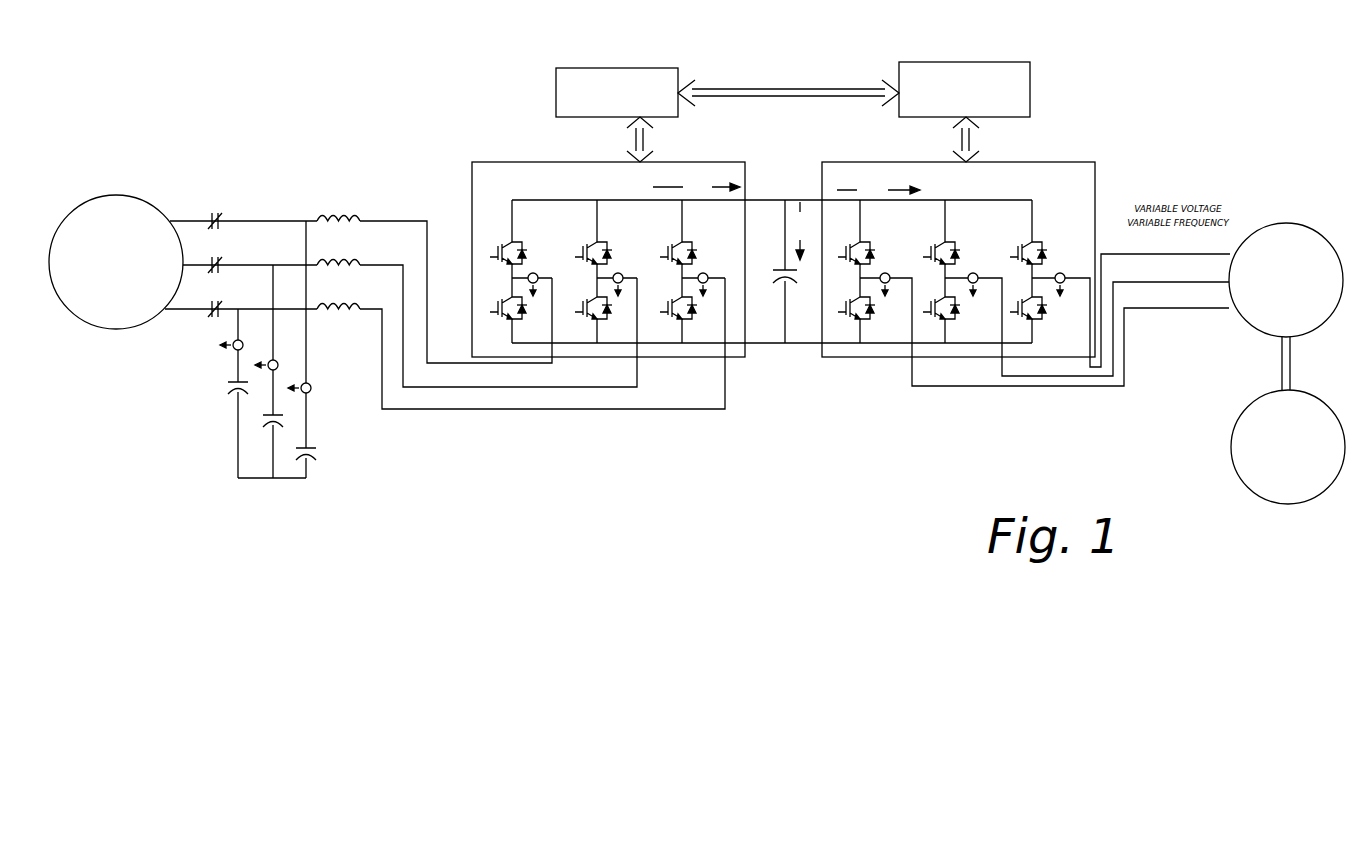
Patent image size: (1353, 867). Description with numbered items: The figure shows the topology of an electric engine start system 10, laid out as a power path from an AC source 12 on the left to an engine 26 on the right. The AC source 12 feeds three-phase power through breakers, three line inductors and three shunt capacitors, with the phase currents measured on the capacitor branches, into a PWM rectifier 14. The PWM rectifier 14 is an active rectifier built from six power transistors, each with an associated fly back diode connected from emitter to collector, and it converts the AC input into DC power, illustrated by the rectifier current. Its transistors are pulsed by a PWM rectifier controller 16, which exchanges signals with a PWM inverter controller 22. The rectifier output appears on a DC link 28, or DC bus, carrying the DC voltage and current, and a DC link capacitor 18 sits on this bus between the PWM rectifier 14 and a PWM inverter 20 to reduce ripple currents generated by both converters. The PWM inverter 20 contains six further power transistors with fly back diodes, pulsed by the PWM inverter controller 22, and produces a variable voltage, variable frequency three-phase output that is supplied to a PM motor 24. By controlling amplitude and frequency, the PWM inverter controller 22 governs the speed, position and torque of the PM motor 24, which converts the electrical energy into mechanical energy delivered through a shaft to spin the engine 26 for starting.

The electric engine start system 10 is at (121, 152).
The AC source 12 is at (66, 217).
The PWM rectifier 14 is at (472, 165).
The PWM rectifier controller 16 is at (556, 95).
The DC link capacitor 18 is at (790, 286).
The PWM inverter 20 is at (822, 165).
The PWM inverter controller 22 is at (1030, 88).
The PM motor 24 is at (1288, 224).
The engine 26 is at (1247, 403).
The DC link 28 is at (790, 200).